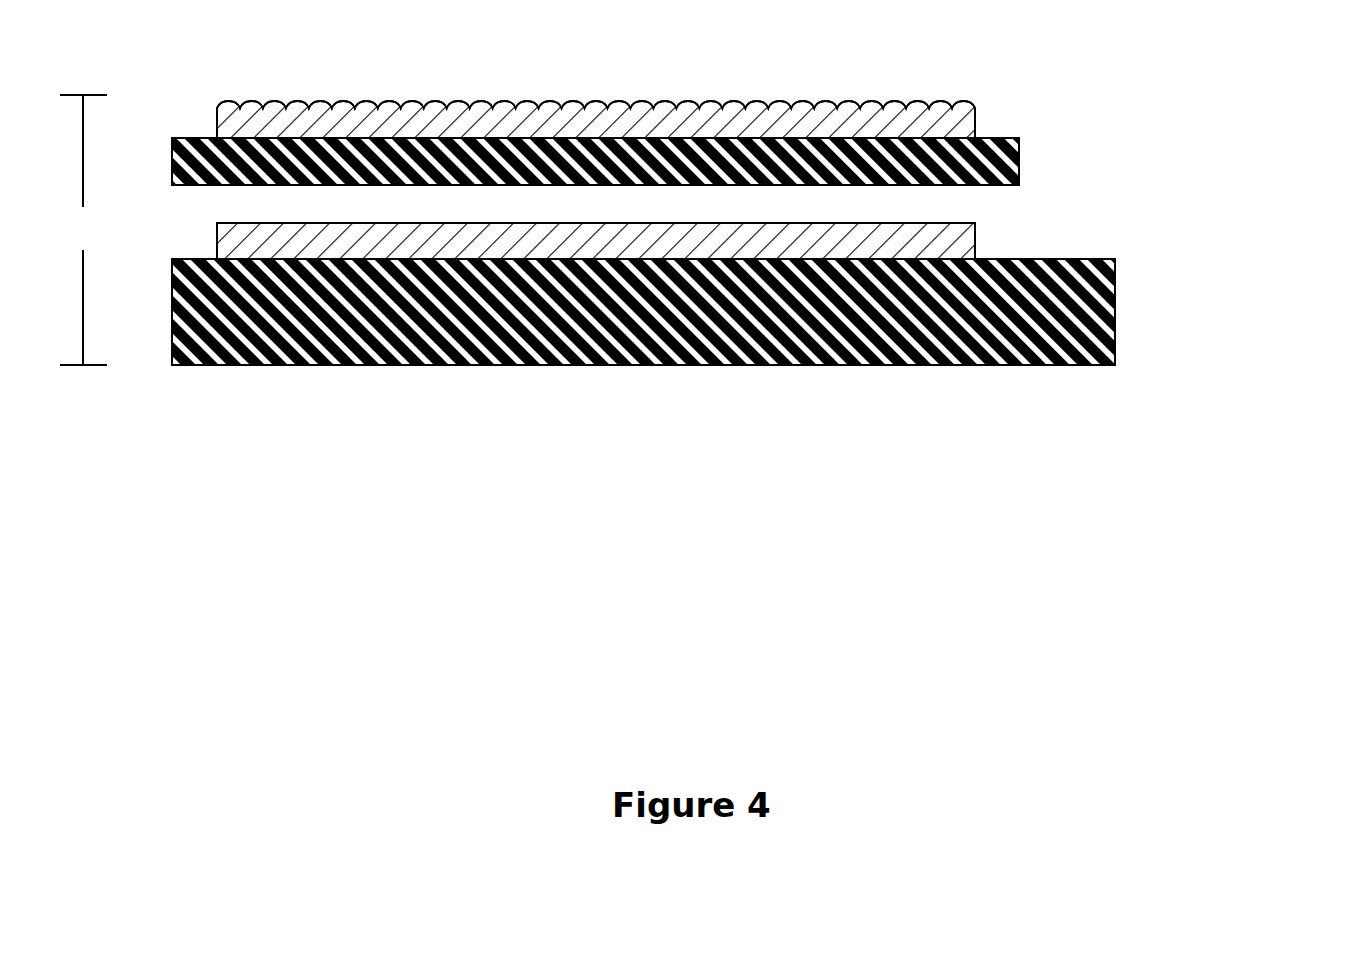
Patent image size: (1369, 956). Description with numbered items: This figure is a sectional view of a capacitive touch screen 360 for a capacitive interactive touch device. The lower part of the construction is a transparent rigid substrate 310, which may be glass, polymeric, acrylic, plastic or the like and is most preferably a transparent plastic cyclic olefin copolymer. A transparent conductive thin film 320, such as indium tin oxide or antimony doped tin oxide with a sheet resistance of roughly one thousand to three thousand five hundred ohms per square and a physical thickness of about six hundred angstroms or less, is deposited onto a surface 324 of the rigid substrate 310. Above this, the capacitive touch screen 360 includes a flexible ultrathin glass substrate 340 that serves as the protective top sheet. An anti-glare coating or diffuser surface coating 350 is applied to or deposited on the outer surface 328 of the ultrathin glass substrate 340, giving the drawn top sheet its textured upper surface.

The transparent rigid substrate 310 is at (1040, 322).
The transparent conductive thin film 320 is at (940, 243).
The surface of substrate 324 is at (1080, 259).
The outer surface 328 is at (1003, 137).
The ultrathin glass substrate 340 is at (1019, 165).
The anti-glare coating 350 is at (975, 110).
The capacitive touch screen 360 is at (86, 230).